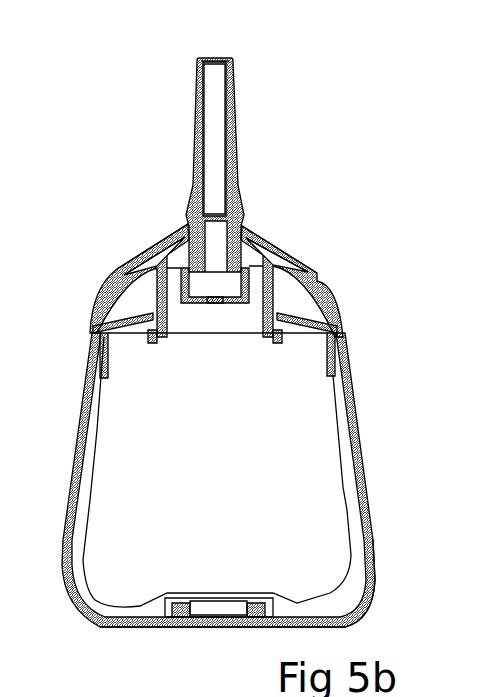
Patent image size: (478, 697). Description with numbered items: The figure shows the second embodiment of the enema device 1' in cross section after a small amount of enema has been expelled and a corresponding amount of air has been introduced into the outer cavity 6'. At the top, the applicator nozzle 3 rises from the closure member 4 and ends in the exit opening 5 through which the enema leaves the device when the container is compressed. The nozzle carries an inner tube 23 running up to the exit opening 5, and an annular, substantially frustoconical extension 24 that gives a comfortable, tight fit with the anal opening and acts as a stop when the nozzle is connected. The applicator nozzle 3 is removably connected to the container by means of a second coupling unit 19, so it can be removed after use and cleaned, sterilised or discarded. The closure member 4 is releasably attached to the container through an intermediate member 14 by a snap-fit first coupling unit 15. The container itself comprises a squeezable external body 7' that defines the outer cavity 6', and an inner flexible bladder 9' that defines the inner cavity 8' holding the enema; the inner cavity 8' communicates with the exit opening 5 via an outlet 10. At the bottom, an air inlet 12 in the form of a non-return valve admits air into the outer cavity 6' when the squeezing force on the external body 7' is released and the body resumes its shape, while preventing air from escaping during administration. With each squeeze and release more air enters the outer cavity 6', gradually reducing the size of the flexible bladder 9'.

The enema device 1' is at (339, 88).
The applicator nozzle 3 is at (238, 117).
The closure member 4 is at (335, 297).
The exit opening 5 is at (218, 57).
The outer cavity 6' is at (249, 480).
The squeezable external body 7' is at (186, 658).
The inner cavity 8' is at (177, 494).
The inner flexible bladder 9' is at (391, 593).
The outlet 10 is at (214, 302).
The air inlet 12 is at (225, 610).
The intermediate member 14 is at (92, 367).
The first coupling unit 15 is at (155, 322).
The second coupling unit 19 is at (258, 232).
The inner tube 23 is at (218, 150).
The frustoconical extension 24 is at (135, 240).